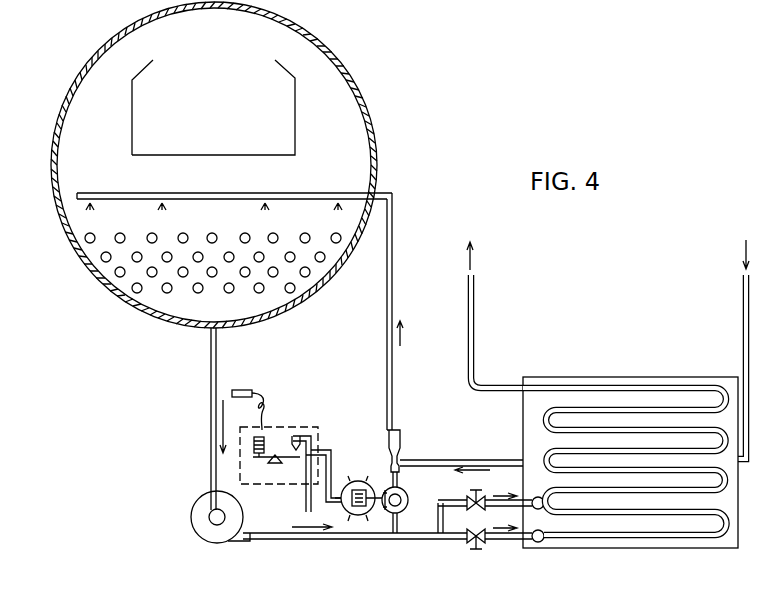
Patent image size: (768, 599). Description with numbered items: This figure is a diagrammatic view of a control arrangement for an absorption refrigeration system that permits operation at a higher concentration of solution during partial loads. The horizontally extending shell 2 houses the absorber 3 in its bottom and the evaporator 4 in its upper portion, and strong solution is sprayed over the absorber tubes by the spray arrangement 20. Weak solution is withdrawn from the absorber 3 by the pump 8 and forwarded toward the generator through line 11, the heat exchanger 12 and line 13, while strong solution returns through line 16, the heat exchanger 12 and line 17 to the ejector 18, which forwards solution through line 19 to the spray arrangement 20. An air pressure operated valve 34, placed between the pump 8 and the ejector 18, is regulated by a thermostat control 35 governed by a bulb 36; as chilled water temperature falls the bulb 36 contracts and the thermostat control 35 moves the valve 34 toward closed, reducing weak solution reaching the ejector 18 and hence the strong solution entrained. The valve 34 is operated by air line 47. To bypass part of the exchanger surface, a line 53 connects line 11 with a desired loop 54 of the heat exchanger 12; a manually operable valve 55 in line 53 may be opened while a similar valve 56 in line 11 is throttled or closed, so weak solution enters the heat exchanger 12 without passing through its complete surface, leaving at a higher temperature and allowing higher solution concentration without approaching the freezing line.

The shell 2 is at (54, 128).
The absorber 3 is at (85, 241).
The evaporator 4 is at (142, 115).
The pump 8 is at (218, 540).
The line 11 is at (330, 538).
The heat exchanger 12 is at (623, 549).
The line 13 is at (477, 294).
The line 16 is at (742, 298).
The line 17 is at (448, 460).
The ejector 18 is at (398, 441).
The line 19 is at (395, 261).
The spray arrangement 20 is at (266, 188).
The air pressure operated valve 34 is at (358, 487).
The thermostat control 35 is at (259, 478).
The bulb 36 is at (248, 386).
The air line 47 is at (326, 498).
The line 53 is at (403, 500).
The loop 54 is at (541, 497).
The manually operable valve 55 is at (481, 496).
The valve 56 is at (484, 547).